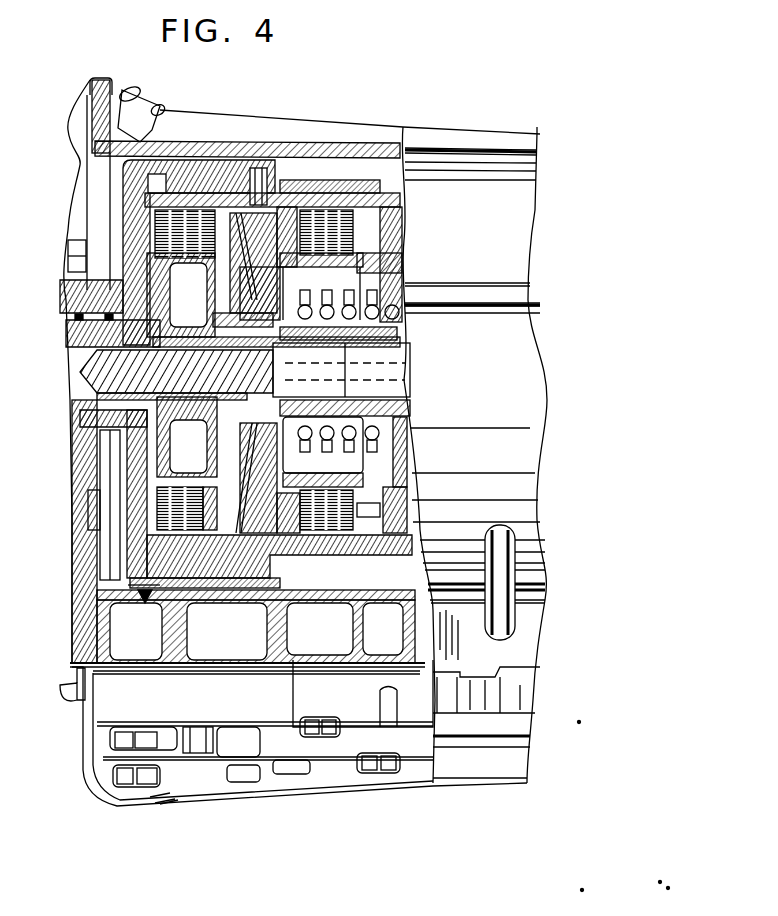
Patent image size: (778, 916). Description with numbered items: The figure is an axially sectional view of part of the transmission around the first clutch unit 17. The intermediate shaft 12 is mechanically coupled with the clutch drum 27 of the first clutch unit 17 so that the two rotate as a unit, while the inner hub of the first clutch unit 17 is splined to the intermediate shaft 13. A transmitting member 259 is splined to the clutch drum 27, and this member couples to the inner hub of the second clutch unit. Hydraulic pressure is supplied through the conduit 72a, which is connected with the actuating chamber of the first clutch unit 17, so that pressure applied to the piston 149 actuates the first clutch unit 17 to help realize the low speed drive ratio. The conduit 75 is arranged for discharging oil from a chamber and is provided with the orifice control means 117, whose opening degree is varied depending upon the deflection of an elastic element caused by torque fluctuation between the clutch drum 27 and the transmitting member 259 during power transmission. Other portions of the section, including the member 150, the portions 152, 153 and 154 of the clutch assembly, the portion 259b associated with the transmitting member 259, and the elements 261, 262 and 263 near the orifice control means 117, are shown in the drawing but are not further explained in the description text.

The intermediate shaft 12 is at (90, 335).
The intermediate shaft 13 is at (108, 373).
The first clutch unit 17 is at (267, 150).
The clutch drum 27 is at (190, 172).
The conduit 72a is at (283, 352).
The conduit 75 is at (105, 578).
The orifice control means 117 is at (170, 592).
The piston 149 is at (283, 460).
The lower hub plate 150 is at (271, 561).
The piston block 152 is at (187, 442).
The cavity 153 is at (183, 487).
The cavity 154 is at (216, 235).
The transmitting member 259 is at (148, 205).
The spring pack 259b is at (158, 492).
The wedge 261 is at (143, 600).
The pocket 262 is at (136, 634).
The lever 263 is at (128, 525).